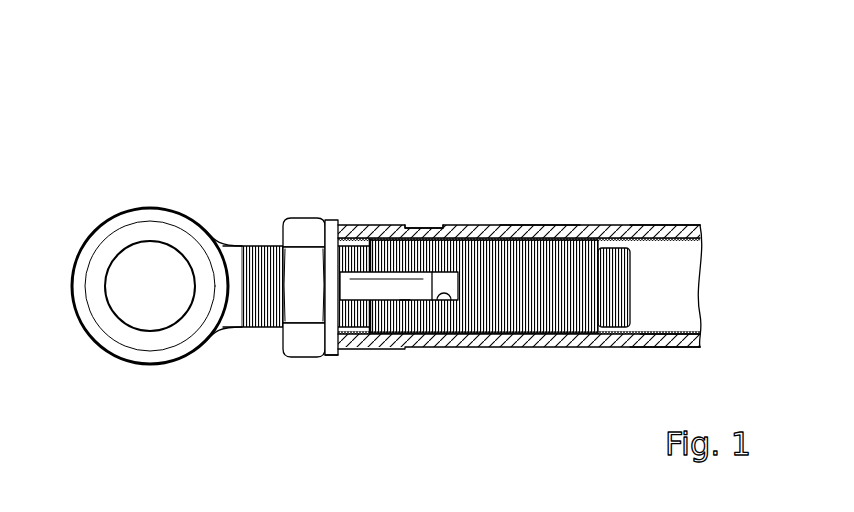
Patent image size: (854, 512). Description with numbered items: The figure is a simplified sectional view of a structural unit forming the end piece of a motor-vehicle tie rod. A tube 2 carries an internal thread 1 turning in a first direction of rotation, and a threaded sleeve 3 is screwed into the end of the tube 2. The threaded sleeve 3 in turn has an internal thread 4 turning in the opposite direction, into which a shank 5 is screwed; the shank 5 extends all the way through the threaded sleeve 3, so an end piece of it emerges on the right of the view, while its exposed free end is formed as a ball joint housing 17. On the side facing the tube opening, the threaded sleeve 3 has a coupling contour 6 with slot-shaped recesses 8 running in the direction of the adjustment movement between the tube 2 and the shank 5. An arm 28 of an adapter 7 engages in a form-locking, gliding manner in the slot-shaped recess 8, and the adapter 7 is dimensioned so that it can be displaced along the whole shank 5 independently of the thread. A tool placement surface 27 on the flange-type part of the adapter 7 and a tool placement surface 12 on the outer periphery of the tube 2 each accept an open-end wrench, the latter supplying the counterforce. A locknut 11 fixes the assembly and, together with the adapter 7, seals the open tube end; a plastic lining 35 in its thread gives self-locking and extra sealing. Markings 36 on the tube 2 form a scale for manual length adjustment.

The internal thread 1 is at (671, 330).
The tube 2 is at (602, 240).
The threaded sleeve 3 is at (562, 315).
The internal thread 4 is at (642, 227).
The shank 5 is at (266, 312).
The coupling contour 6 is at (405, 307).
The adapter 7 is at (333, 230).
The slot-shaped recess 8 is at (440, 303).
The locknut 11 is at (302, 225).
The tool placement surface 12 is at (428, 227).
The ball joint housing 17 is at (117, 237).
The tool placement surface 27 is at (337, 359).
The arm 28 is at (390, 283).
The plastic lining 35 is at (278, 238).
The markings 36 is at (540, 223).